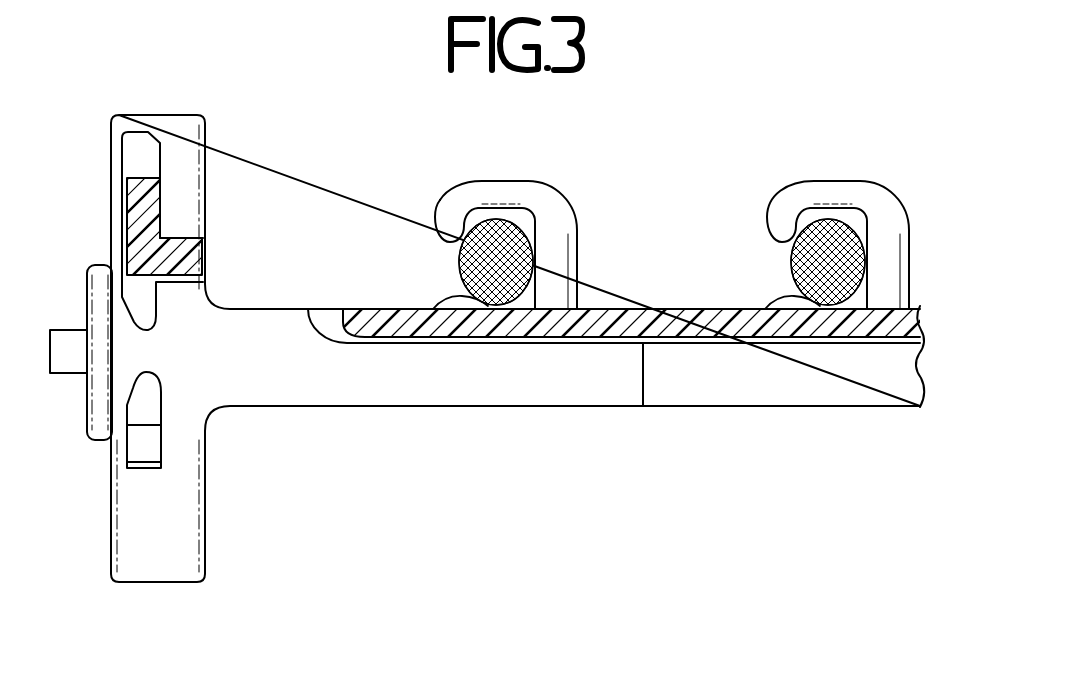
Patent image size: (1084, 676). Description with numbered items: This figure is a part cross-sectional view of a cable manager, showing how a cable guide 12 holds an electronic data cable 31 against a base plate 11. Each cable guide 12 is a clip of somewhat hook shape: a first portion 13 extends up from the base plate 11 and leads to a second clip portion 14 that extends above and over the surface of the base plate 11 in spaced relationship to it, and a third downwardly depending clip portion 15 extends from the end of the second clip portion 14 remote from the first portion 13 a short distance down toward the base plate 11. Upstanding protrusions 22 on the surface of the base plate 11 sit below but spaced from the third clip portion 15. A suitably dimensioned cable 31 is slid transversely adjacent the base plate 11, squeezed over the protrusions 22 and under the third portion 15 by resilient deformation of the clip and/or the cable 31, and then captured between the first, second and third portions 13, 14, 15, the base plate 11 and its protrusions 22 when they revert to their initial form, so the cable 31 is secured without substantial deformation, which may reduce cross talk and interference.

The base plate 11 is at (693, 307).
The cable guide 12 is at (655, 213).
The first portion 13 is at (592, 203).
The second clip portion 14 is at (550, 177).
The third downwardly depending clip portion 15 is at (433, 188).
The upstanding protrusion 22 is at (451, 298).
The electronic data cable 31 is at (458, 268).